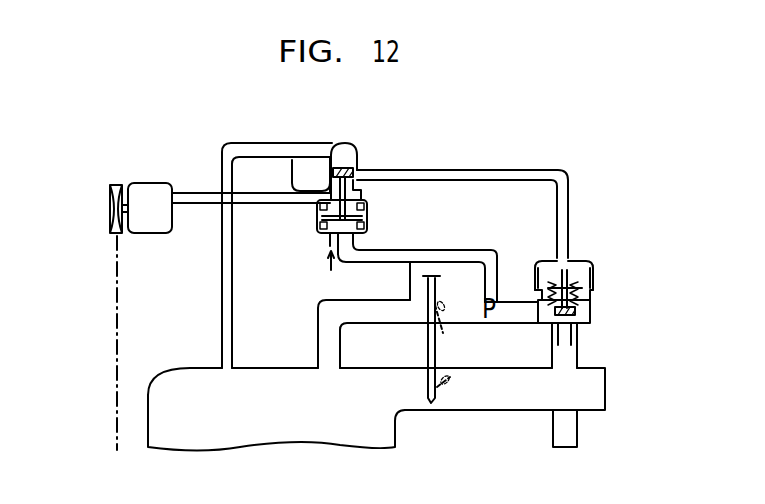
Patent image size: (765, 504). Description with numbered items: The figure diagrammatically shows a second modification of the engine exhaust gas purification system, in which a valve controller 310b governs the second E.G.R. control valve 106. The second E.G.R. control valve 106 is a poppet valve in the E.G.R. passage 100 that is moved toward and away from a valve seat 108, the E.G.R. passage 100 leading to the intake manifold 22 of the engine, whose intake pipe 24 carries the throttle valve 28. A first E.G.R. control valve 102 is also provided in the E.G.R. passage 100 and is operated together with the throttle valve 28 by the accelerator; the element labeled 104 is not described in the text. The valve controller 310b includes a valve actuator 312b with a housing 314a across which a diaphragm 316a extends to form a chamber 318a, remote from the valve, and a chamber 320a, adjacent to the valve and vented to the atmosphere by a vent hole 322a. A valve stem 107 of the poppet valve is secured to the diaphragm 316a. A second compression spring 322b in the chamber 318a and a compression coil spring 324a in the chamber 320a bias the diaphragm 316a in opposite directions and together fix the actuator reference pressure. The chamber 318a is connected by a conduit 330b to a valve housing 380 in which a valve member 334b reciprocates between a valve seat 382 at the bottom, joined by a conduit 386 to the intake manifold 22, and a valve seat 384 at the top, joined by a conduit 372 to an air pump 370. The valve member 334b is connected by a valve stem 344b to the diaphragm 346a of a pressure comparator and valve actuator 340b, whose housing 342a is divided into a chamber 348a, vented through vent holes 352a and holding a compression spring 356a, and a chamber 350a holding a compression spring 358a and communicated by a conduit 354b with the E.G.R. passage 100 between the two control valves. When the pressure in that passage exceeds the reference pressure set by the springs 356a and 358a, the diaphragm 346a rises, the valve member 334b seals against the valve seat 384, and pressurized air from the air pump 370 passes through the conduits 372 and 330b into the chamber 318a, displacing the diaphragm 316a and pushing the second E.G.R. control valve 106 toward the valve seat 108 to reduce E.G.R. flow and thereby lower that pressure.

The valve controller 310b is at (486, 112).
The air pump 370 is at (152, 186).
The conduit 372 is at (218, 190).
The conduit 386 is at (220, 258).
The valve seat 382 is at (296, 192).
The valve stem 344b is at (312, 180).
The valve housing 380 is at (359, 146).
The valve seat 384 is at (360, 135).
The valve member 334b is at (361, 152).
The pressure comparator and valve actuator 340b is at (328, 270).
The chamber 348a is at (316, 220).
The chamber 350a is at (329, 238).
The housing 342a is at (322, 242).
The compression spring 356a is at (367, 213).
The vent holes 352a is at (372, 210).
The diaphragm 346a is at (370, 218).
The compression spring 358a is at (365, 262).
The conduit 354b is at (410, 290).
The conduit 330b is at (500, 150).
The vent hole 322a is at (540, 283).
The valve actuator 312b is at (606, 270).
The diaphragm 316a is at (546, 256).
The chamber 318a is at (571, 258).
The second compression spring 322b is at (578, 255).
The housing 314a is at (590, 270).
The compression coil spring 324a is at (580, 284).
The valve stem 107 is at (577, 310).
The second E.G.R. control valve 106 is at (580, 320).
The valve seat 108 is at (577, 337).
The chamber 320a is at (538, 300).
The pin 104 is at (427, 343).
The first E.G.R. control valve 102 is at (465, 340).
The throttle valve 28 is at (452, 386).
The intake manifold 22 is at (190, 368).
The intake pipe 24 is at (528, 402).
The E.G.R. passage 100 is at (318, 326).